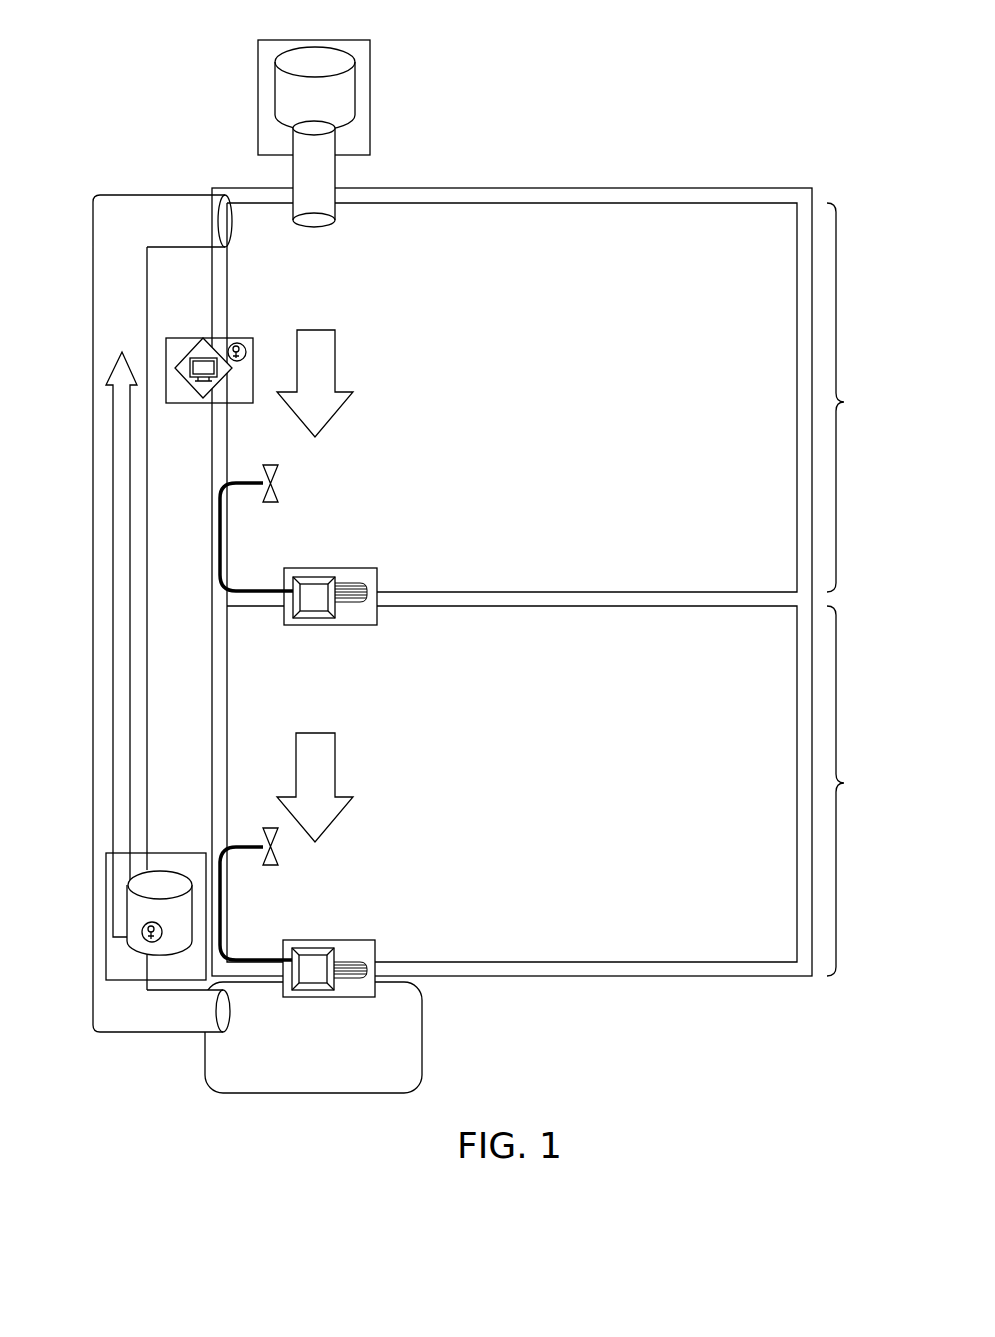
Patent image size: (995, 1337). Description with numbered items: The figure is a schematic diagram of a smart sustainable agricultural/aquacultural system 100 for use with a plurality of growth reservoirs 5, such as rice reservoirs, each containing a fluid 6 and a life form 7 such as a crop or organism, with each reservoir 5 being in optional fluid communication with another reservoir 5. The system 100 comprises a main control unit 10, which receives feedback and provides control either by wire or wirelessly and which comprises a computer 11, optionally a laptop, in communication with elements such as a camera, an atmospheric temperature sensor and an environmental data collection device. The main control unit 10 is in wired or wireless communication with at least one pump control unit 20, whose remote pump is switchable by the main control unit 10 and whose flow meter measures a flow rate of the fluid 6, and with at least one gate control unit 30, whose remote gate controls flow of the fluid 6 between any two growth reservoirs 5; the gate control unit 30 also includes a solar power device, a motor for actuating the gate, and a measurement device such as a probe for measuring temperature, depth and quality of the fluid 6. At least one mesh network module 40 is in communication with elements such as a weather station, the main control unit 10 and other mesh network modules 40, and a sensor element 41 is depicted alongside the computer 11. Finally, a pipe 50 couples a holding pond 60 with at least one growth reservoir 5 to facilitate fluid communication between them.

The smart sustainable agricultural/aquacultural system 100 is at (713, 107).
The growth reservoir 5 is at (848, 589).
The fluid 6 is at (333, 412).
The life form 7 is at (557, 218).
The main control unit 10 is at (166, 341).
The computer 11 is at (190, 355).
The pump control unit 20 is at (370, 97).
The gate control unit 30 is at (330, 626).
The mesh network module 40 is at (142, 932).
The sensor 41 is at (241, 344).
The pipe 50 is at (93, 613).
The holding pond 60 is at (205, 1050).